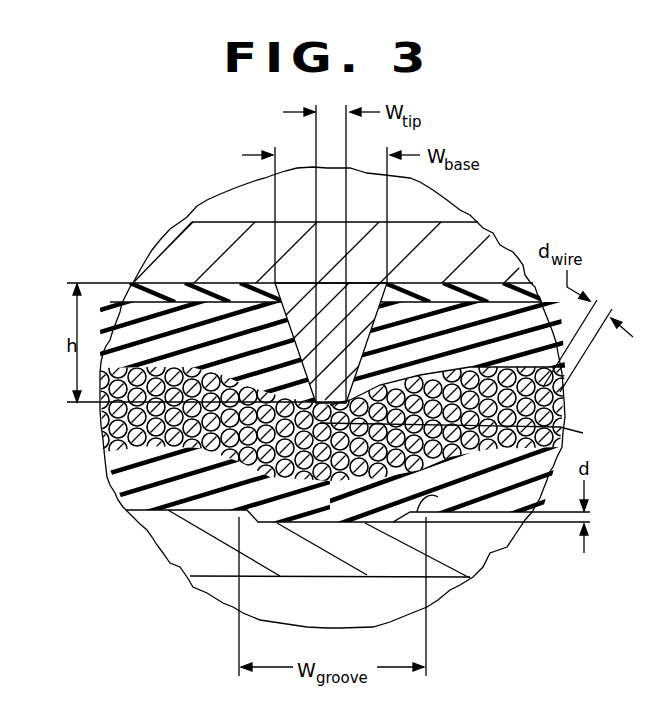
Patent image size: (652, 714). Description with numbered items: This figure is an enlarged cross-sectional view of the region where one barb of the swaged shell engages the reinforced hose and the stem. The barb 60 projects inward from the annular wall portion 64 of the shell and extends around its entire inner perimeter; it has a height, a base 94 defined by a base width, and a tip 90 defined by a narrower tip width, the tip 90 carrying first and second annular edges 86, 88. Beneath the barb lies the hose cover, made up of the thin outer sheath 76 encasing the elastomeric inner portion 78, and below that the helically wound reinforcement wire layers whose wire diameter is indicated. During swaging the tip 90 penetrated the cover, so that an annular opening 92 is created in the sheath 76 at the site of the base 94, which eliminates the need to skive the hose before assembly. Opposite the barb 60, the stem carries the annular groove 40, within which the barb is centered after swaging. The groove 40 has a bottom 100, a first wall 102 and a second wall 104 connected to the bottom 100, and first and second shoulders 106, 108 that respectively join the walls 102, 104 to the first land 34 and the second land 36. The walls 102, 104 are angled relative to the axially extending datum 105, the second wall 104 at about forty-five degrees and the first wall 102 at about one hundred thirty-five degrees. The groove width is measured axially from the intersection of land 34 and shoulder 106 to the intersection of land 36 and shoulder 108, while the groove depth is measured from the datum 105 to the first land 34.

The first land 34 is at (165, 511).
The second land 36 is at (512, 511).
The annular groove 40 is at (300, 535).
The barb 60 is at (217, 298).
The annular wall portion 64 is at (137, 283).
The sheath 76 is at (134, 292).
The inner portion of cover 78 is at (137, 334).
The first annular edge 86 is at (320, 423).
The second annular edge 88 is at (465, 434).
The tip 90 is at (330, 400).
The annular opening 92 is at (377, 300).
The base 94 is at (297, 263).
The bottom 100 is at (320, 523).
The first wall 102 is at (258, 522).
The second wall 104 is at (470, 578).
The axially extending datum 105 is at (570, 522).
The first shoulder 106 is at (190, 576).
The second shoulder 108 is at (438, 497).